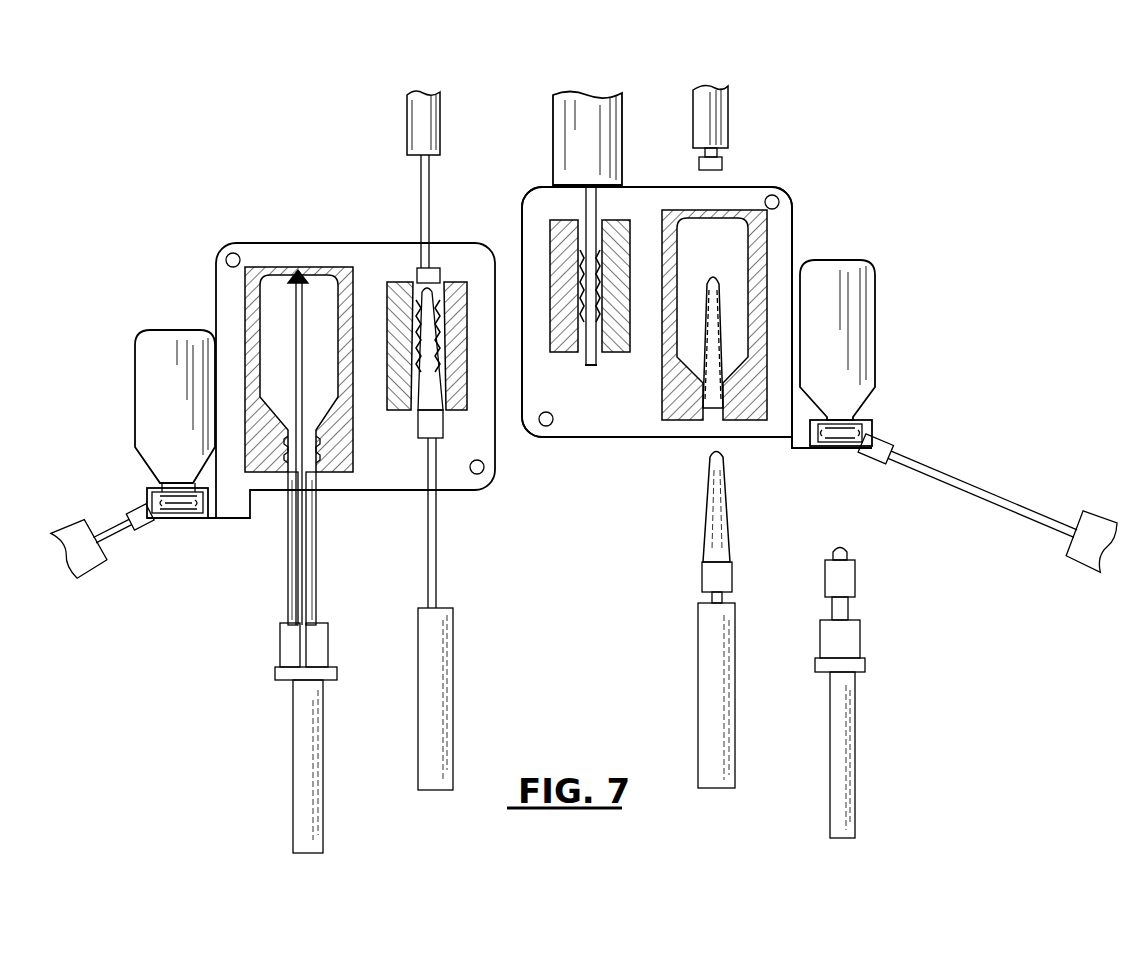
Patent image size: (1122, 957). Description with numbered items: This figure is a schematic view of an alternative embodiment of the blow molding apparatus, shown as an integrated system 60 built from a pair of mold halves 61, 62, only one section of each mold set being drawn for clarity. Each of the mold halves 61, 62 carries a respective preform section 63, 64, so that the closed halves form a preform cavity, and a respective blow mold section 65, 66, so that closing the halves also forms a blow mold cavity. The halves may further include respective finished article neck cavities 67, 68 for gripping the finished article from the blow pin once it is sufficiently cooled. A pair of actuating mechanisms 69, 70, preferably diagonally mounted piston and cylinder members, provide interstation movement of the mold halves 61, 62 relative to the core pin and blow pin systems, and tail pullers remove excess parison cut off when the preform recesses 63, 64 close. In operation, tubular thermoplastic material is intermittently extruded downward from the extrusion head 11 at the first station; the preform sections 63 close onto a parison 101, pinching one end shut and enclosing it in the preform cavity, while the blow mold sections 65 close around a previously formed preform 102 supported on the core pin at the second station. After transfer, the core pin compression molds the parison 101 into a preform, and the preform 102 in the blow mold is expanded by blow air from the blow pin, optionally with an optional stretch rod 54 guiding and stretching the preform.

The extrusion head 11 is at (608, 155).
The stretch rod 54 is at (302, 412).
The integrated system 60 is at (828, 199).
The mold half 61 is at (317, 257).
The mold half 62 is at (778, 245).
The preform section 63 is at (588, 357).
The preform section 64 is at (465, 392).
The blow mold section 65 is at (663, 423).
The blow mold section 66 is at (272, 303).
The finished article neck cavity 67 is at (855, 427).
The finished article neck cavity 68 is at (209, 518).
The actuating mechanism 69 is at (980, 490).
The actuating mechanism 70 is at (115, 540).
The parison 101 is at (582, 285).
The preform 102 is at (738, 370).